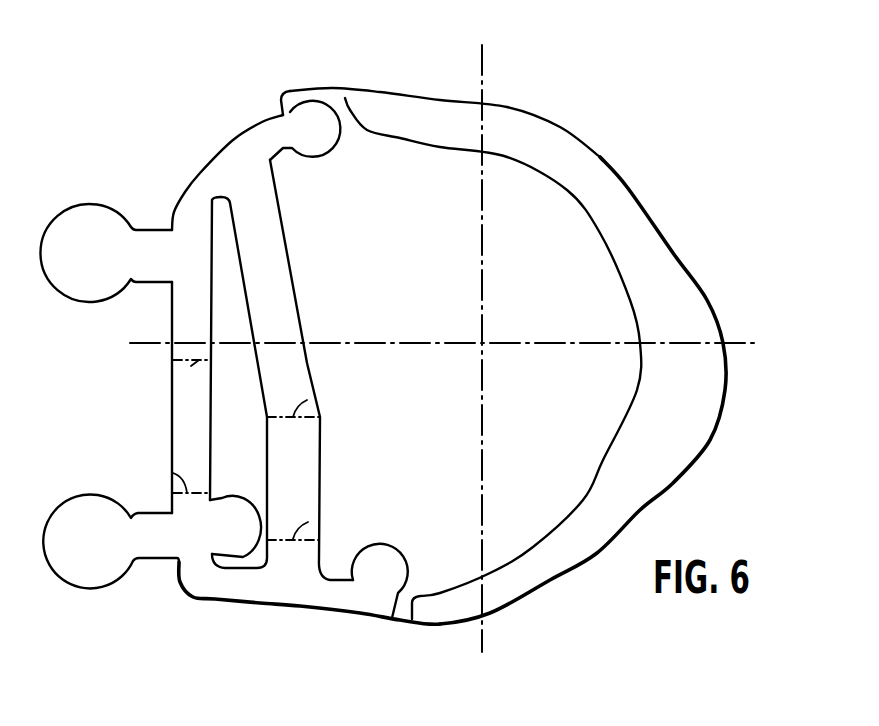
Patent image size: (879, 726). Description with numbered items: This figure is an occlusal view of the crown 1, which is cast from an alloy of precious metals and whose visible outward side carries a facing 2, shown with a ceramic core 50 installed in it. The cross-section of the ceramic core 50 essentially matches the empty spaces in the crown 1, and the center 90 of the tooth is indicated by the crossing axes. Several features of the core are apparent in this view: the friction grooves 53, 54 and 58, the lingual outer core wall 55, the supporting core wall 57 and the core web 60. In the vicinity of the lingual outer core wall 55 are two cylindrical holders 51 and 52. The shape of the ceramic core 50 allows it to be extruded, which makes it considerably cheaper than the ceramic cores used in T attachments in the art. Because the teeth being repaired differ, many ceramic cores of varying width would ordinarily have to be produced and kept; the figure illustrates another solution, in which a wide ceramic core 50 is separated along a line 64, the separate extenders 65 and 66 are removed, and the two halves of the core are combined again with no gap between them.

The crown 1 is at (510, 195).
The facing 2 is at (592, 175).
The ceramic core 50 is at (145, 125).
The cylindrical holder 51 is at (102, 560).
The cylindrical holder 52 is at (88, 235).
The friction groove 53 is at (377, 567).
The friction groove 54 is at (300, 120).
The lingual outer core wall 55 is at (182, 307).
The supporting core wall 57 is at (297, 590).
The friction groove 58 is at (231, 536).
The core web 60 is at (280, 280).
The line 64 is at (173, 371).
The extender 65 is at (187, 417).
The extender 66 is at (298, 477).
The center 90 is at (483, 348).